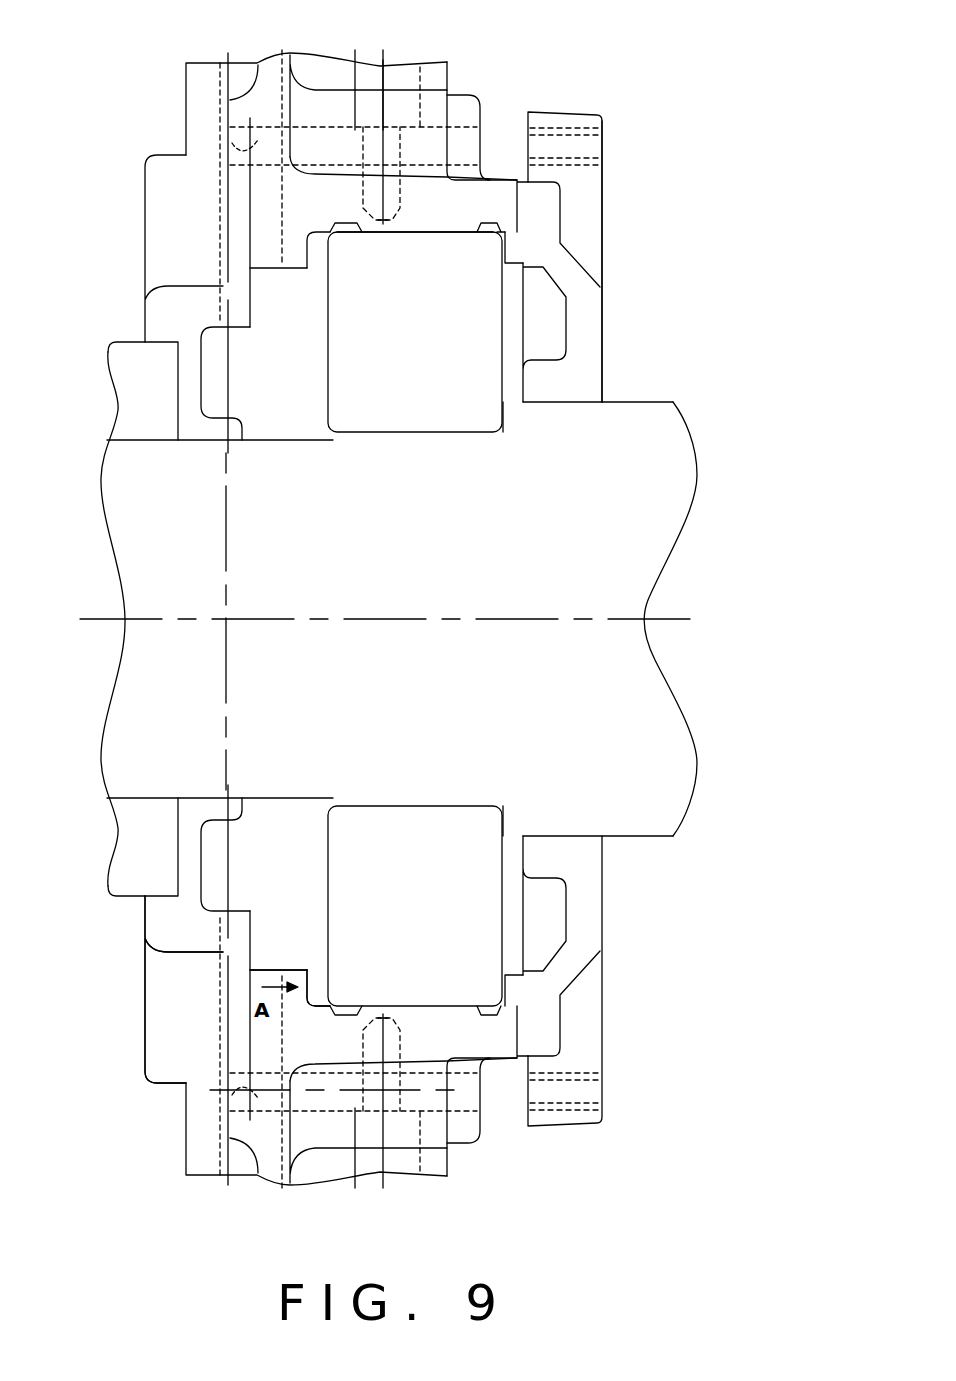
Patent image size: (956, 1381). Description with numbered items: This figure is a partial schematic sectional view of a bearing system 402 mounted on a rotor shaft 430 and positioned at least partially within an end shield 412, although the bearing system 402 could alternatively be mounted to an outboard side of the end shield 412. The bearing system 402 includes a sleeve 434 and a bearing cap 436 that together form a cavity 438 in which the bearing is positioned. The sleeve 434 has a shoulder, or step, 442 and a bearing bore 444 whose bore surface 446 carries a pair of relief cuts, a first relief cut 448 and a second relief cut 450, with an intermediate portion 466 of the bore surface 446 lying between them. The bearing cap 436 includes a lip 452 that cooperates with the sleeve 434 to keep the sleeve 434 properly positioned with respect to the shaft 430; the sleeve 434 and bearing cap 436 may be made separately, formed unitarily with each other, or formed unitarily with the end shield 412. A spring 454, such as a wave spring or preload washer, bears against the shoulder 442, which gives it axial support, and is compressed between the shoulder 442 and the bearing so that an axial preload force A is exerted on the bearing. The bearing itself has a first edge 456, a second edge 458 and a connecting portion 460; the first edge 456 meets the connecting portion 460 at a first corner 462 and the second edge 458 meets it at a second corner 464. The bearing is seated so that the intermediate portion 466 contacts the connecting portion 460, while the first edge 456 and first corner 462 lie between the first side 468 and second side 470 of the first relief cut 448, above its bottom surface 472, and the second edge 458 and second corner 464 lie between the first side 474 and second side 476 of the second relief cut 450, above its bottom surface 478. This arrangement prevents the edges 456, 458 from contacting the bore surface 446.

The bearing system 402 is at (582, 238).
The end shield 412 is at (162, 1008).
The rotor shaft 430 is at (630, 518).
The sleeve 434 is at (420, 207).
The bearing cap 436 is at (583, 300).
The cavity 438 is at (508, 337).
The shoulder 442 is at (293, 980).
The bearing bore 444 is at (317, 250).
The bore surface 446 is at (397, 225).
The first relief cut 448 is at (333, 217).
The second relief cut 450 is at (493, 220).
The lip 452 is at (578, 235).
The spring 454 is at (313, 967).
The first edge 456 is at (330, 247).
The second edge 458 is at (498, 247).
The connecting portion 460 is at (378, 236).
The first corner 462 is at (320, 233).
The second corner 464 is at (518, 222).
The intermediate portion 466 is at (395, 217).
The first side 468 is at (330, 222).
The second side 470 is at (353, 213).
The bottom surface 472 is at (327, 217).
The first side 474 is at (480, 222).
The second side 476 is at (520, 222).
The bottom surface 478 is at (483, 222).